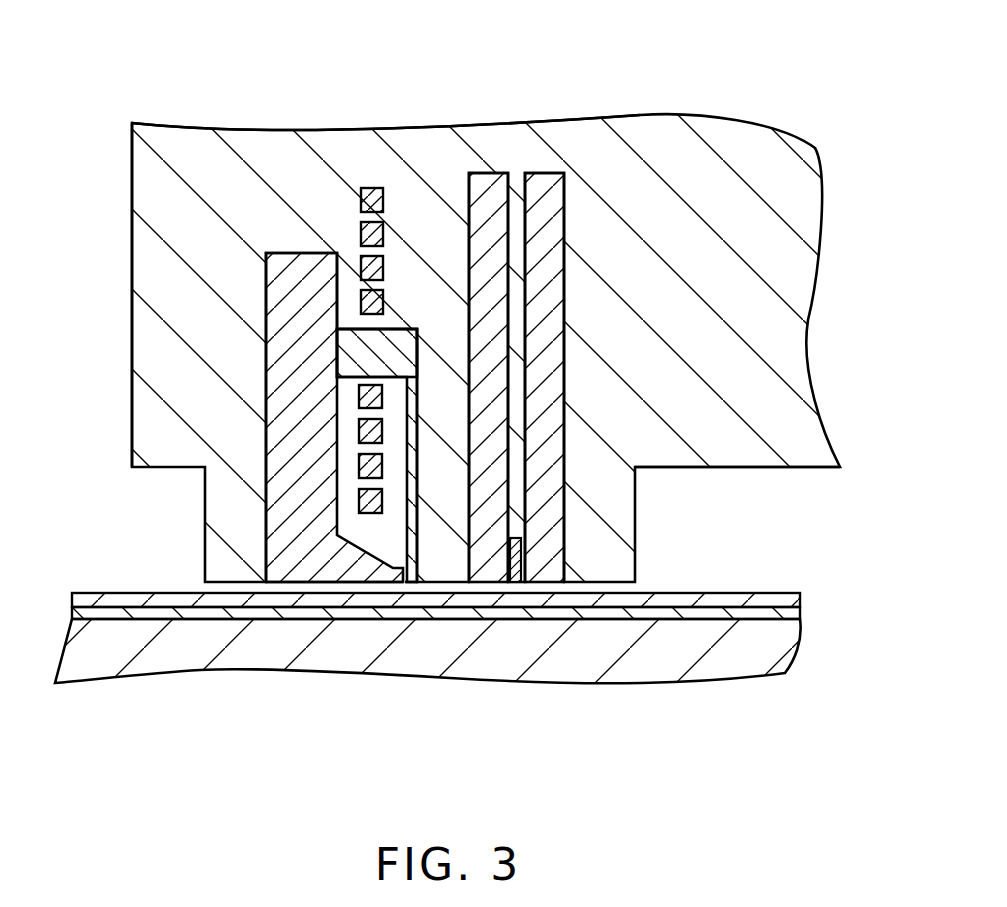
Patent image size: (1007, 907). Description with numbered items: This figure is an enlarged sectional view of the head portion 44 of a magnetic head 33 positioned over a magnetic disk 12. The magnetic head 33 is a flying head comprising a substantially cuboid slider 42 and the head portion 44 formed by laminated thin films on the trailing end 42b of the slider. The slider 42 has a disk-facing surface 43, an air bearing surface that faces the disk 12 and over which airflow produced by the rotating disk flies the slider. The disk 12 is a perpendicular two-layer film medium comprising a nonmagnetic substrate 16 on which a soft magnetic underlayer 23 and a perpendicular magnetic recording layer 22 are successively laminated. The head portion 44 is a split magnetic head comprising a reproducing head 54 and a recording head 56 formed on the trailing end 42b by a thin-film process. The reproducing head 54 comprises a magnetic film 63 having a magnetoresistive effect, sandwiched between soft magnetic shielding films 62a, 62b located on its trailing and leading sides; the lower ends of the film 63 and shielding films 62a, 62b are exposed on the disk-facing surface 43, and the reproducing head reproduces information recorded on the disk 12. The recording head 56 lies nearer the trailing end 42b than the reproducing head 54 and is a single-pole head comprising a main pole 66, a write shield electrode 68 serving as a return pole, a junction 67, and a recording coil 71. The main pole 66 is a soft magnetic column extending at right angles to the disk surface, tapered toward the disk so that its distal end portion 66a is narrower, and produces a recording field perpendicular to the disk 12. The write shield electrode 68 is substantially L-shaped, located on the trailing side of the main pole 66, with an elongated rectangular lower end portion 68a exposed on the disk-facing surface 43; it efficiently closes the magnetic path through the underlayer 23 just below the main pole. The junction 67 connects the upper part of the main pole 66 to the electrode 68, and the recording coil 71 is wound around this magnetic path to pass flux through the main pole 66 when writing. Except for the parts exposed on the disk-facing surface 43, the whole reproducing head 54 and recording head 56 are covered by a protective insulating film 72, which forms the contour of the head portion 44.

The magnetic head 33 is at (191, 74).
The slider 42 is at (750, 126).
The trailing end 42b is at (132, 210).
The protective insulating film 72 is at (132, 318).
The disk-facing surface 43 is at (800, 470).
The head portion 44 is at (408, 144).
The reproducing head 54 is at (581, 170).
The recording head 56 is at (285, 222).
The write shield electrode 68 is at (270, 400).
The lower end portion 68a is at (310, 570).
The main pole 66 is at (412, 428).
The distal end portion 66a is at (425, 575).
The junction 67 is at (400, 330).
The recording coil 71 is at (371, 188).
The soft magnetic shielding film 62a is at (487, 575).
The soft magnetic shielding film 62b is at (555, 580).
The magnetic film 63 is at (512, 580).
The magnetic disk 12 is at (756, 700).
The perpendicular magnetic recording layer 22 is at (746, 598).
The soft magnetic underlayer 23 is at (796, 612).
The substrate 16 is at (774, 658).